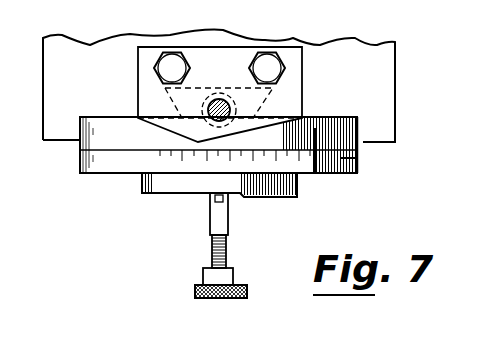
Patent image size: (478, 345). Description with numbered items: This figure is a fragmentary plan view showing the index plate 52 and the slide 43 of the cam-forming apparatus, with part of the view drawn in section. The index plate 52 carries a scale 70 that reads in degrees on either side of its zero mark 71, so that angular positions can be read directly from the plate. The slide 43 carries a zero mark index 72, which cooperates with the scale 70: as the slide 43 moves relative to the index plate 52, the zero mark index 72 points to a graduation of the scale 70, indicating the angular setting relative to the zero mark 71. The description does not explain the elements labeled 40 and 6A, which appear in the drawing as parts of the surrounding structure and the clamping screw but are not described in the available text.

The clamp plate 40 is at (303, 84).
The graduated bar 52 is at (125, 166).
The index 72 is at (355, 117).
The pin 43 is at (317, 137).
The slide block 71 is at (358, 159).
The clamp body 70 is at (312, 173).
The thumb screw 6A is at (195, 291).